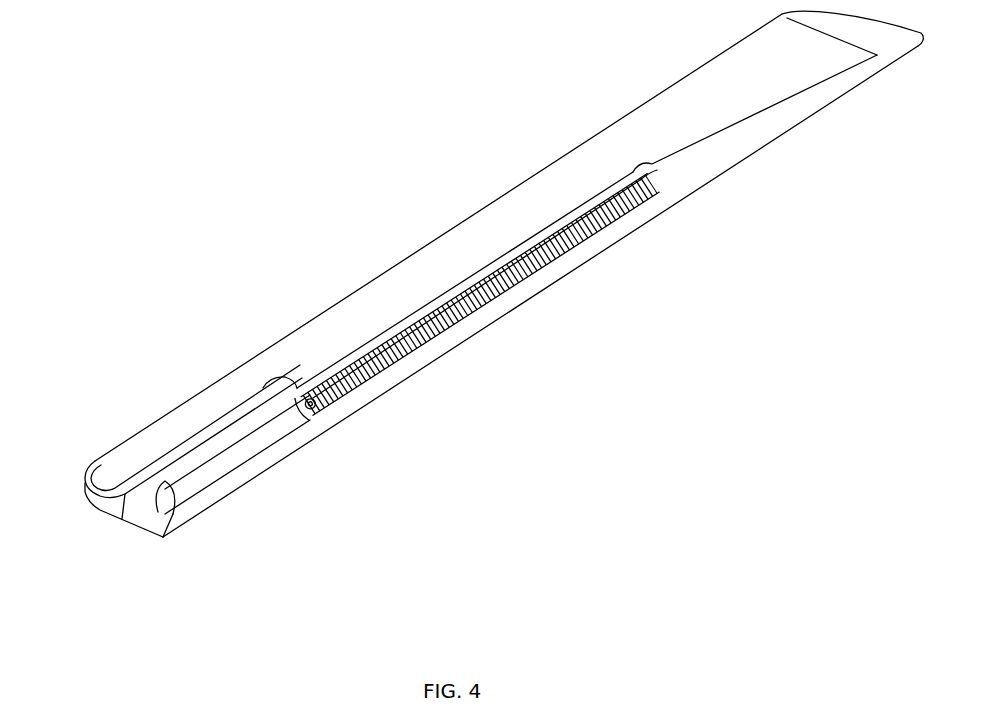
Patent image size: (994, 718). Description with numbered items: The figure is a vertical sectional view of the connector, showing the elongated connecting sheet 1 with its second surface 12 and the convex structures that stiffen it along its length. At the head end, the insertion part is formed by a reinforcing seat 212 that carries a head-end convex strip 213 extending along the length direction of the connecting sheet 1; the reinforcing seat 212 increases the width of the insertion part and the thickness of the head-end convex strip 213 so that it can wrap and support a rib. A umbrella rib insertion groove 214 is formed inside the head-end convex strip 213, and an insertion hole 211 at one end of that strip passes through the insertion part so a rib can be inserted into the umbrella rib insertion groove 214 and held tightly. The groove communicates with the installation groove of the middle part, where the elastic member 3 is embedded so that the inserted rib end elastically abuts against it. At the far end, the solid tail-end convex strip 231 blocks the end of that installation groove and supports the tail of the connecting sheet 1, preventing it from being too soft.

The connecting sheet 1 is at (665, 110).
The second surface 12 is at (490, 230).
The tail-end convex strip 231 is at (783, 103).
The reinforcing seat 212 is at (155, 462).
The insertion hole 211 is at (163, 507).
The head-end convex strip 213 is at (257, 417).
The umbrella rib insertion groove 214 is at (255, 450).
The elastic member 3 is at (540, 267).